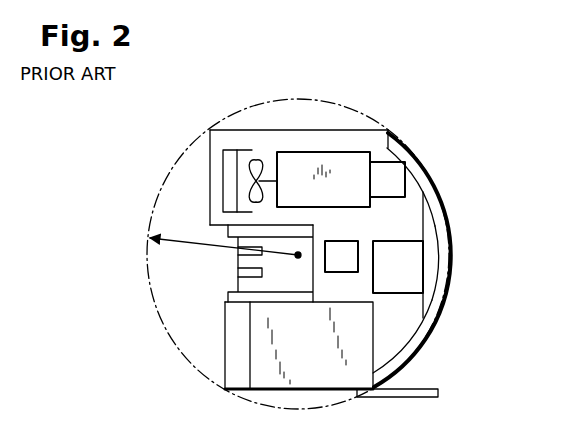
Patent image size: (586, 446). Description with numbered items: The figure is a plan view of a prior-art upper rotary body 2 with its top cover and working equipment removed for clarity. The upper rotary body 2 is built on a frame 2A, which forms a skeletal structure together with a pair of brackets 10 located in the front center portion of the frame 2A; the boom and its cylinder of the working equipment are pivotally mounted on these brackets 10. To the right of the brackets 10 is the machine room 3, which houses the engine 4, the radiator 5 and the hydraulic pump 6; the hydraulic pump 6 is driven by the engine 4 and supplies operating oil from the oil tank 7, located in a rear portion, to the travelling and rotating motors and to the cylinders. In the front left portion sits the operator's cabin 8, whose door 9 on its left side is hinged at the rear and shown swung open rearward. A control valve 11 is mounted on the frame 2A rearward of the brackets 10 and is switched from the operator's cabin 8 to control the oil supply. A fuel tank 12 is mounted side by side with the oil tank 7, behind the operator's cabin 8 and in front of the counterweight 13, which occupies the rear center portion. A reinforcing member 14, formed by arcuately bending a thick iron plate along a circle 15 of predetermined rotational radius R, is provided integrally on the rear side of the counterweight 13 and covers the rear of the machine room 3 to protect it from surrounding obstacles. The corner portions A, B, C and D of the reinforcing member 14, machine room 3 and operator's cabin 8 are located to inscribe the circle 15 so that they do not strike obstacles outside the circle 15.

The upper rotary body 2 is at (298, 139).
The frame 2A is at (402, 220).
The machine room 3 is at (352, 129).
The engine 4 is at (355, 162).
The radiator 5 is at (228, 168).
The hydraulic pump 6 is at (392, 178).
The oil tank 7 is at (413, 270).
The operator's cabin 8 is at (245, 366).
The door 9 is at (430, 408).
The brackets 10 is at (245, 228).
The control valve 11 is at (348, 258).
The fuel tank 12 is at (403, 333).
The counterweight 13 is at (432, 252).
The reinforcing member 14 is at (432, 190).
The circle 15 is at (147, 263).
The corner portion A is at (392, 146).
The corner portion B is at (210, 130).
The corner portion C is at (225, 390).
The corner portion D is at (375, 397).
The rotational radius R is at (225, 240).